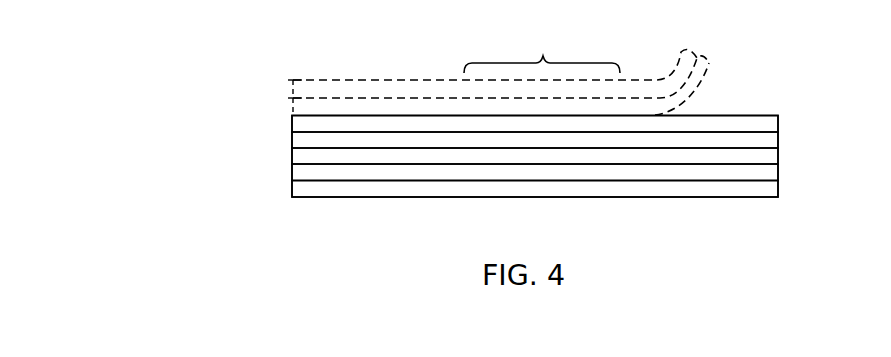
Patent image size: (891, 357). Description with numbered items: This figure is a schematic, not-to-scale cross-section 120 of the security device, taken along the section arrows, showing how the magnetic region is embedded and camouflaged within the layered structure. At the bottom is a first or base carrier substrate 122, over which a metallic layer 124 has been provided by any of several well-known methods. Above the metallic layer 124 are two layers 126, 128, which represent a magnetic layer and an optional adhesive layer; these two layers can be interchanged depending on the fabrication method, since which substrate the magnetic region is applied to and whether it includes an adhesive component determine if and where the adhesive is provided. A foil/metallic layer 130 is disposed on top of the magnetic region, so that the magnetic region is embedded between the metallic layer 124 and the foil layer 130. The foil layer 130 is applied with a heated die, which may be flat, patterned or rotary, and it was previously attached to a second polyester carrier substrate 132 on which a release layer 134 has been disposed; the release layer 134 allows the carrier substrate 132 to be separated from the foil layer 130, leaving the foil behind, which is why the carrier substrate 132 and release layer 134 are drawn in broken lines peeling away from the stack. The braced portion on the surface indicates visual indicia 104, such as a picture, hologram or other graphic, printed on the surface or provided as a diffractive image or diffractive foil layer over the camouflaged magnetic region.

The visual indicia 104 is at (542, 45).
The cross-section 120 is at (779, 85).
The base carrier substrate 122 is at (300, 188).
The metallic layer 124 is at (300, 172).
The magnetic layer or adhesive layer 126 is at (300, 157).
The adhesive layer or magnetic layer 128 is at (300, 140).
The foil layer 130 is at (300, 123).
The second polyester carrier substrate 132 is at (289, 87).
The release layer 134 is at (289, 105).